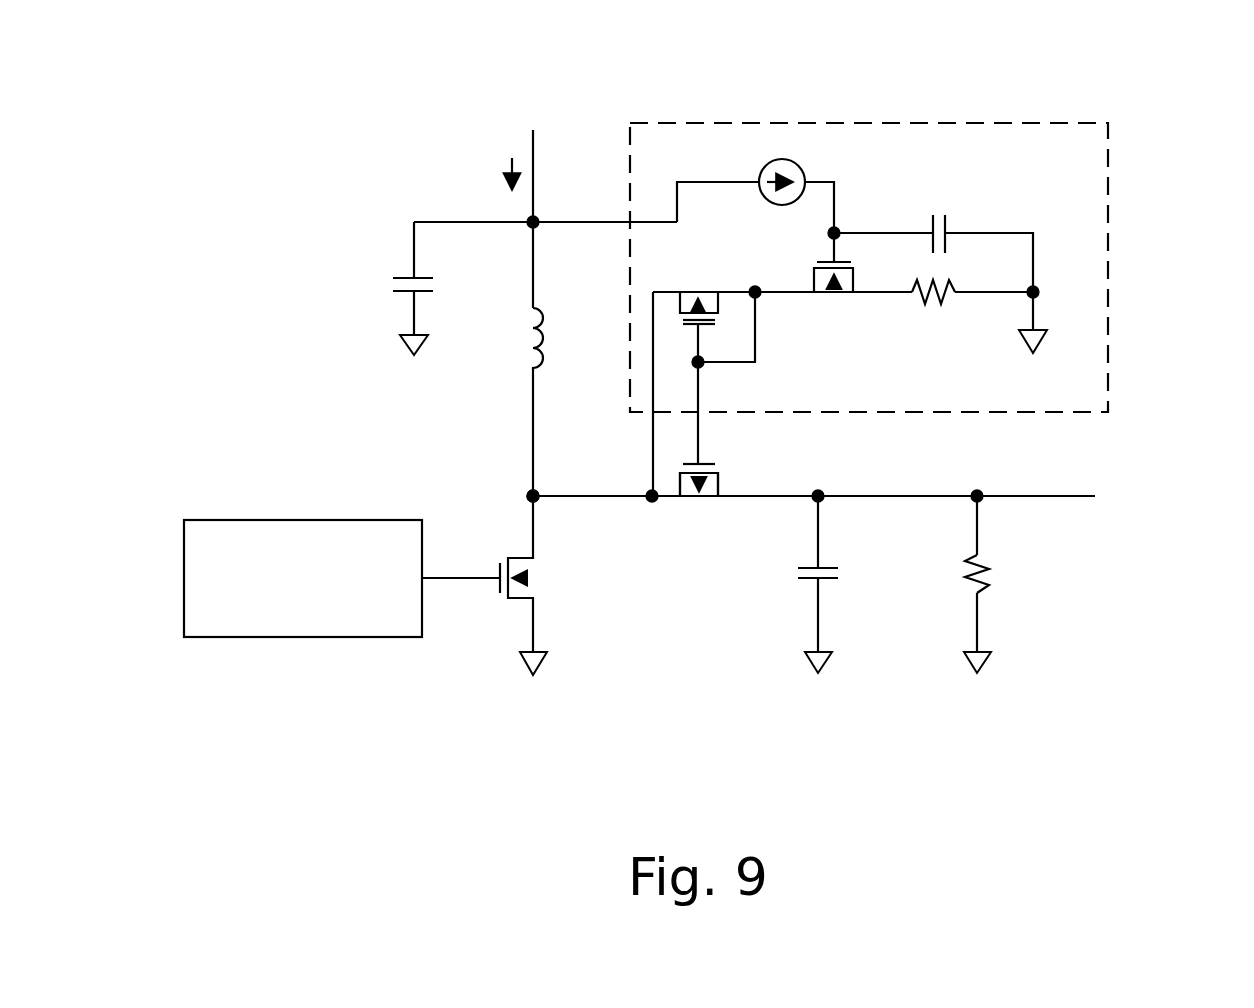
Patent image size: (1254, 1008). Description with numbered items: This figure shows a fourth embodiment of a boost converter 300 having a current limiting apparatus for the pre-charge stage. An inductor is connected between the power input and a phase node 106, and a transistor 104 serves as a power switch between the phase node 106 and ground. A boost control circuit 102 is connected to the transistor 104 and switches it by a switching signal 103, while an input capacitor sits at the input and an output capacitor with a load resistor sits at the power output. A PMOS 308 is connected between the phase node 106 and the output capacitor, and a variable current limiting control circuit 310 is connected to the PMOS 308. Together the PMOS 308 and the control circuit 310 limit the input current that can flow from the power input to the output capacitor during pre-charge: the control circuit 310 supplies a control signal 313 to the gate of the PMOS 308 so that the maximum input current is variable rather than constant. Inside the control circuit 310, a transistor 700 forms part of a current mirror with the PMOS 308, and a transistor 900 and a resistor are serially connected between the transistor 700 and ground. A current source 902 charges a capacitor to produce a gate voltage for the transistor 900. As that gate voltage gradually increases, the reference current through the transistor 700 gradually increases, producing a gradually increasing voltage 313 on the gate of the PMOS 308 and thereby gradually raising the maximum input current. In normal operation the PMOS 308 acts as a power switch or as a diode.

The boost converter 300 is at (247, 118).
The boost control circuit 102 is at (303, 520).
The switching signal 103 is at (467, 582).
The transistor 104 is at (549, 594).
The phase node 106 is at (528, 495).
The variable current limiting control circuit 310 is at (1108, 259).
The current source 902 is at (803, 163).
The transistor 900 is at (834, 310).
The transistor 700 is at (704, 280).
The control signal 313 is at (699, 440).
The PMOS 308 is at (700, 510).